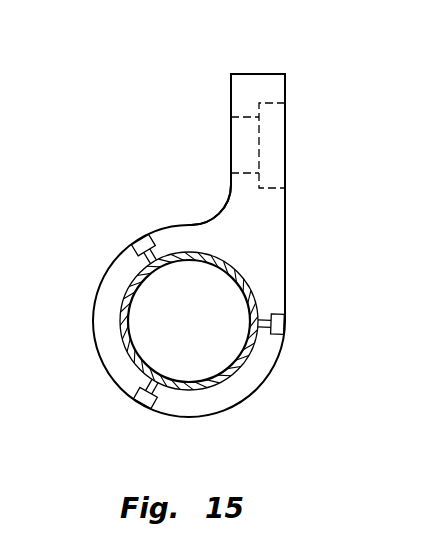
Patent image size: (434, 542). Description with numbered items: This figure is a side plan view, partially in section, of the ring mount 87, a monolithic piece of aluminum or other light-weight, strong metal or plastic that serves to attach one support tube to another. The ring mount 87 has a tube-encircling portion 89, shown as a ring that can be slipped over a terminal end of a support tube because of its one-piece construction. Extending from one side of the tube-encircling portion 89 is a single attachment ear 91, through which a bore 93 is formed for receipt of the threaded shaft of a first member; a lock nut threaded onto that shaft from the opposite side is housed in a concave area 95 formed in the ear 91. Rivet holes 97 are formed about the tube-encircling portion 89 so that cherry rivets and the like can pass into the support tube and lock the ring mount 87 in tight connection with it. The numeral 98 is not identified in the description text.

The ring mount 87 is at (190, 237).
The tube-encircling portion 89 is at (112, 353).
The attachment ear 91 is at (238, 87).
The bore 93 is at (240, 142).
The concave area 95 is at (279, 142).
The rivet holes 97 is at (142, 243).
The locking tab 98 is at (143, 402).